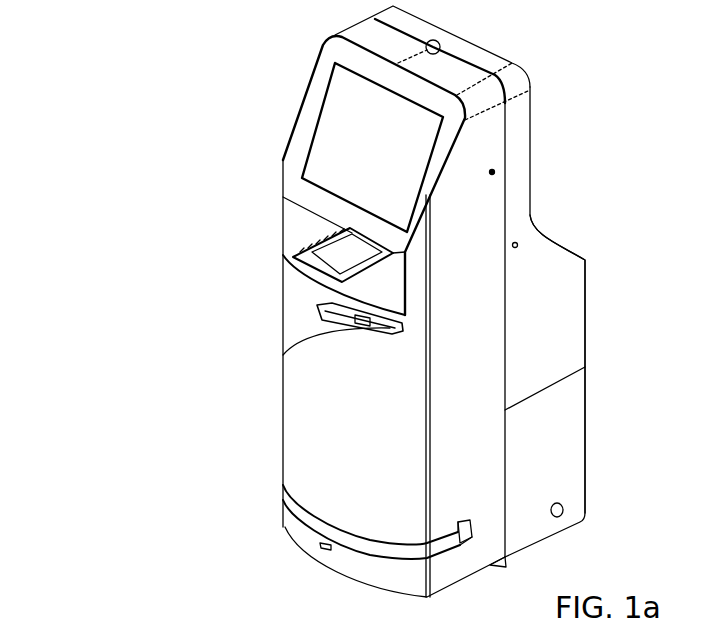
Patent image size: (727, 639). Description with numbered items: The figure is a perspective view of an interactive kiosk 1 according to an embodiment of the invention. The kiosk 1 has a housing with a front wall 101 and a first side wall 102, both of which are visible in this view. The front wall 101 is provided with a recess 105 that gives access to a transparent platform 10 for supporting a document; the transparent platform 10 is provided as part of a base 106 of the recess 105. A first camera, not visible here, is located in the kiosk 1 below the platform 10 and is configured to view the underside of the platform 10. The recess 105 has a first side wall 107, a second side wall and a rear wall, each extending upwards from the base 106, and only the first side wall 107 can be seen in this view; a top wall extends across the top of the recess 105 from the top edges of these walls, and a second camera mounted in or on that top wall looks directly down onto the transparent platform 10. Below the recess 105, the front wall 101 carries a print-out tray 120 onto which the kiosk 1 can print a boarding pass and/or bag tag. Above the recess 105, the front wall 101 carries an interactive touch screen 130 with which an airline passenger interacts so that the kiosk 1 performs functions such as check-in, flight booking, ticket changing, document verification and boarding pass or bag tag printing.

The interactive kiosk 1 is at (148, 117).
The transparent platform 10 is at (282, 277).
The interactive touch screen 130 is at (353, 101).
The first side wall 107 is at (295, 218).
The base 106 is at (363, 287).
The print-out tray 120 is at (283, 358).
The recess 105 is at (390, 273).
The first side wall 102 is at (472, 348).
The front wall 101 is at (323, 440).